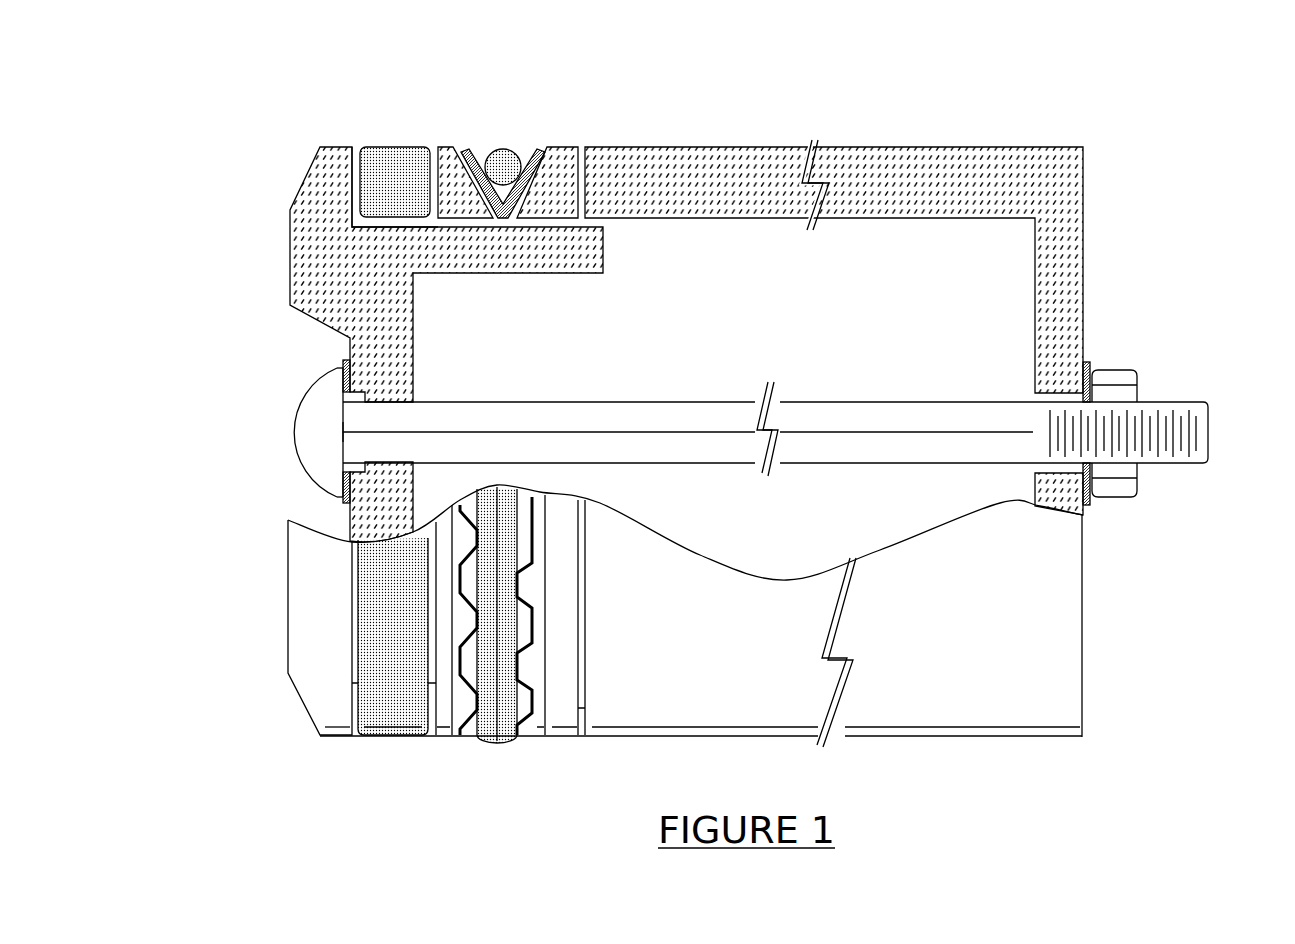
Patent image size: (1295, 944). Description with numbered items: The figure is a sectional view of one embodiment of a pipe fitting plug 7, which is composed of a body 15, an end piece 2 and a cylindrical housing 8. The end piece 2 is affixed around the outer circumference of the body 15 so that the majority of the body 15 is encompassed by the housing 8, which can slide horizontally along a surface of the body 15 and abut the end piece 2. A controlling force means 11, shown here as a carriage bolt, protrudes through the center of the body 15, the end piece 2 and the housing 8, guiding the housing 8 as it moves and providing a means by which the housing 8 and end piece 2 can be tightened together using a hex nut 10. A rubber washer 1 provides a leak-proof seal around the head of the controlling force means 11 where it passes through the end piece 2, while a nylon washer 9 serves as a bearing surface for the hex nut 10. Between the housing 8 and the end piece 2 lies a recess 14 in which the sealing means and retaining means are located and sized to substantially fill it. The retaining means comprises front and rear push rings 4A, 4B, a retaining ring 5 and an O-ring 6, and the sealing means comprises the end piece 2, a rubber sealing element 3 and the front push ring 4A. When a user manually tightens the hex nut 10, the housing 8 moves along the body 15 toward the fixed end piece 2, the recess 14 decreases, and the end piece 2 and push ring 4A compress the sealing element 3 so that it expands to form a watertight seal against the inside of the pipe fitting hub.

The rubber washer 1 is at (710, 417).
The end piece 2 is at (305, 170).
The rubber sealing element 3 is at (390, 140).
The front push ring 4A is at (445, 140).
The rear push ring 4B is at (571, 144).
The retaining ring 5 is at (468, 142).
The O-ring 6 is at (508, 140).
The pipe fitting plug 7 is at (251, 611).
The cylindrical housing 8 is at (952, 135).
The nylon washer 9 is at (1095, 357).
The hex nut 10 is at (1140, 372).
The controlling force means 11 is at (1192, 475).
The recess 14 is at (355, 152).
The body 15 is at (395, 336).